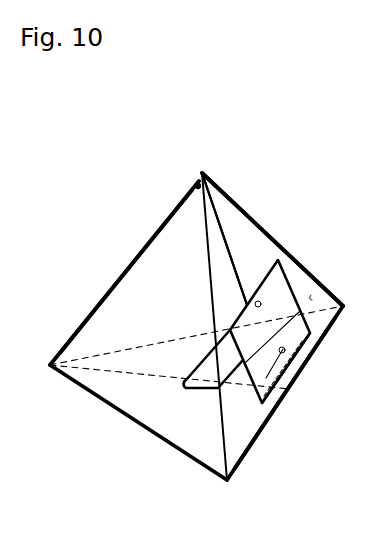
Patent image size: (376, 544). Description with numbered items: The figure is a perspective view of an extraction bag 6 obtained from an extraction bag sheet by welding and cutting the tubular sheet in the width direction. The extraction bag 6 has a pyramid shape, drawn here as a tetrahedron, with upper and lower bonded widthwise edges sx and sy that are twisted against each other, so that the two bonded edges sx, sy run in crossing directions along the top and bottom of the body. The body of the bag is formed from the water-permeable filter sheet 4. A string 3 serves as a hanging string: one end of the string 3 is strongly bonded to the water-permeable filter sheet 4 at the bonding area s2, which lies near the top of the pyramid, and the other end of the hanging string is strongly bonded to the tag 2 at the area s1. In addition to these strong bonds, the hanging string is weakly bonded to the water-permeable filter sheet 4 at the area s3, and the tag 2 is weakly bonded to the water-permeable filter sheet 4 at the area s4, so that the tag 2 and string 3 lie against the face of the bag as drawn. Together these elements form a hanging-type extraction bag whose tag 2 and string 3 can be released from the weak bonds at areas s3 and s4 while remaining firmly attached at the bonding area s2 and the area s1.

The tag 2 is at (282, 301).
The string 3 is at (225, 248).
The water-permeable filter sheet 4 is at (253, 257).
The extraction bag 6 is at (95, 485).
The area s1 is at (285, 393).
The bonding area s2 is at (192, 182).
The area s3 is at (197, 393).
The area s4 is at (284, 353).
The bonded widthwise edge sx is at (257, 446).
The bonded widthwise edge sy is at (127, 262).